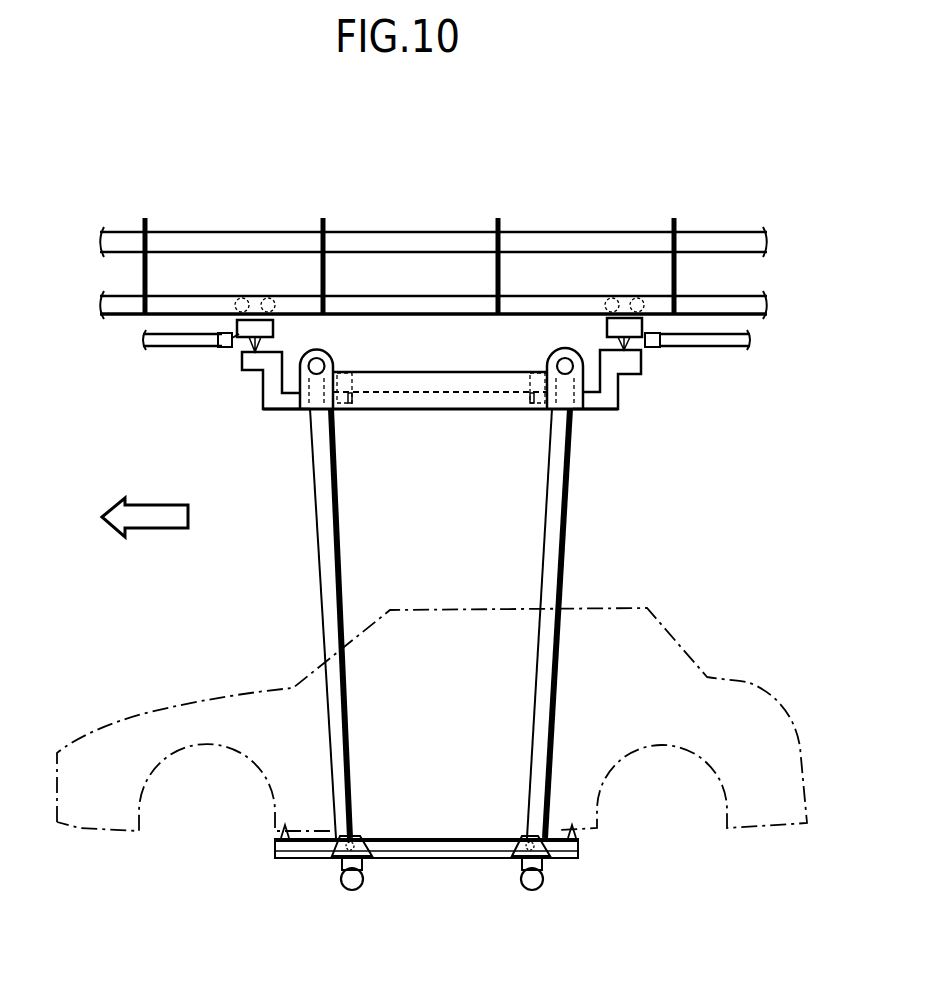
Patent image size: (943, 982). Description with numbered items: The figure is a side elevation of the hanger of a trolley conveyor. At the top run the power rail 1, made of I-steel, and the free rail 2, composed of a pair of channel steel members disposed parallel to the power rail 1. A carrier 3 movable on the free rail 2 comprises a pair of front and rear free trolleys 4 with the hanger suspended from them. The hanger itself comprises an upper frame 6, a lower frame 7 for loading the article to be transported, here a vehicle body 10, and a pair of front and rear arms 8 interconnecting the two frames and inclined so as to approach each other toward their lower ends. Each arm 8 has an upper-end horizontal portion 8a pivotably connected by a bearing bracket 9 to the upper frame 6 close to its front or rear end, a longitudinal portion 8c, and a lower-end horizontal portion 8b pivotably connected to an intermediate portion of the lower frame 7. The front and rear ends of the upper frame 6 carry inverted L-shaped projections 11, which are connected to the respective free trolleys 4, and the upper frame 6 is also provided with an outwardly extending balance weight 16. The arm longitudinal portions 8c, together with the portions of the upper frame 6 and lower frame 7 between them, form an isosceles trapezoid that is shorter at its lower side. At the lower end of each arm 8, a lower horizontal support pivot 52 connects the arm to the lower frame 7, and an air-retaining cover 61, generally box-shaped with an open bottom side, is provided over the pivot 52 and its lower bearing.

The power rail 1 is at (395, 237).
The free rail 2 is at (420, 302).
The carrier 3 is at (653, 448).
The free trolley 4 is at (630, 300).
The upper frame 6 is at (431, 412).
The lower frame 7 is at (437, 859).
The arm 8 is at (446, 609).
The upper-end horizontal portion 8a is at (316, 362).
The lower-end horizontal portion 8b is at (352, 883).
The longitudinal portion 8c is at (322, 532).
The bearing bracket 9 is at (328, 354).
The vehicle body 10 is at (662, 622).
The inverted L-shaped projection 11 is at (242, 357).
The balance weight 16 is at (425, 378).
The lower horizontal support pivot 52 is at (348, 823).
The air-retaining cover 61 is at (337, 860).